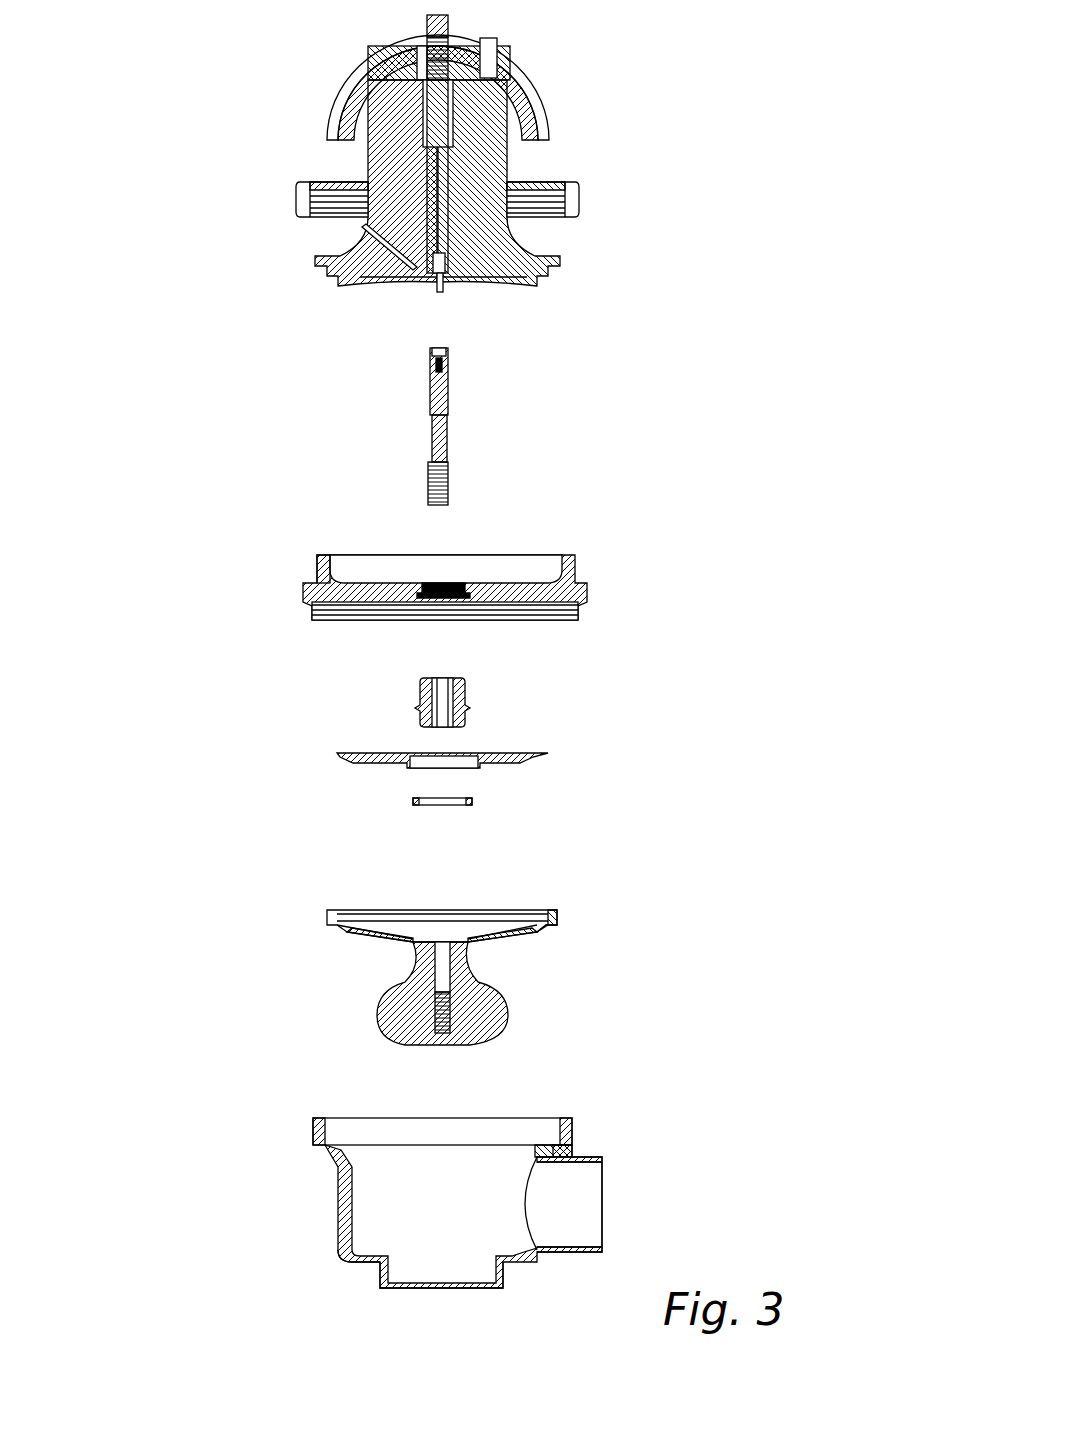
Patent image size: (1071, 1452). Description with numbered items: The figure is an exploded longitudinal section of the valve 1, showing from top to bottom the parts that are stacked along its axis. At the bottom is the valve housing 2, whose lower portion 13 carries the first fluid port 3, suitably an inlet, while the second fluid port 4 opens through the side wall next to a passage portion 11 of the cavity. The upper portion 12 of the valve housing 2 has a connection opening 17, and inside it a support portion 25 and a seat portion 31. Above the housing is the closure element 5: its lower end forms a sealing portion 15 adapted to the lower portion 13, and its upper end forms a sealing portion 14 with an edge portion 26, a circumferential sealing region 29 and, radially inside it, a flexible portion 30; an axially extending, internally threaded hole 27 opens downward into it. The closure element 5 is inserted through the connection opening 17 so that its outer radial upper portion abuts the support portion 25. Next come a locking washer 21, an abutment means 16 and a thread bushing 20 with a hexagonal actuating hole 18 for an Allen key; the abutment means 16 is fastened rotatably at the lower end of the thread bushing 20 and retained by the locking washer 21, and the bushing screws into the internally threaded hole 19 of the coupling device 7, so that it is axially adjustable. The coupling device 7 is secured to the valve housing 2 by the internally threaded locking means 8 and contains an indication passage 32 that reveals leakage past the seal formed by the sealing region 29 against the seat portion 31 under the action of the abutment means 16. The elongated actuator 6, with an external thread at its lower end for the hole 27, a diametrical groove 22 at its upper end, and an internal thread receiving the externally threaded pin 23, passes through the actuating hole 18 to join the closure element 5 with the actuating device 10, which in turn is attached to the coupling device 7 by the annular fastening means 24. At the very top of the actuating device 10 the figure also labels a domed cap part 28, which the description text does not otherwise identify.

The valve 1 is at (262, 124).
The valve housing 2 is at (443, 1178).
The first fluid port 3 is at (455, 1290).
The second fluid port 4 is at (603, 1185).
The closure element 5 is at (452, 966).
The actuator 6 is at (472, 419).
The coupling device 7 is at (475, 553).
The locking means 8 is at (587, 613).
The actuating device 10 is at (495, 174).
The passage portion 11 is at (518, 1232).
The upper portion 12 is at (316, 1127).
The lower portion 13 is at (365, 1265).
The sealing portion 14 is at (327, 912).
The sealing portion 15 is at (382, 1034).
The abutment means 16 is at (548, 752).
The connection opening 17 is at (488, 1118).
The hexagonal actuating hole 18 is at (442, 690).
The hole 19 is at (445, 587).
The thread bushing 20 is at (492, 689).
The locking washer 21 is at (470, 799).
The diametrical groove 22 is at (447, 352).
The externally threaded pin 23 is at (441, 290).
The annular fastening means 24 is at (585, 192).
The support portion 25 is at (555, 1150).
The edge portion 26 is at (550, 909).
The hole 27 is at (447, 978).
The dome cap 28 is at (520, 62).
The sealing region 29 is at (350, 932).
The flexible portion 30 is at (380, 950).
The seat portion 31 is at (540, 1150).
The indication passage 32 is at (318, 578).